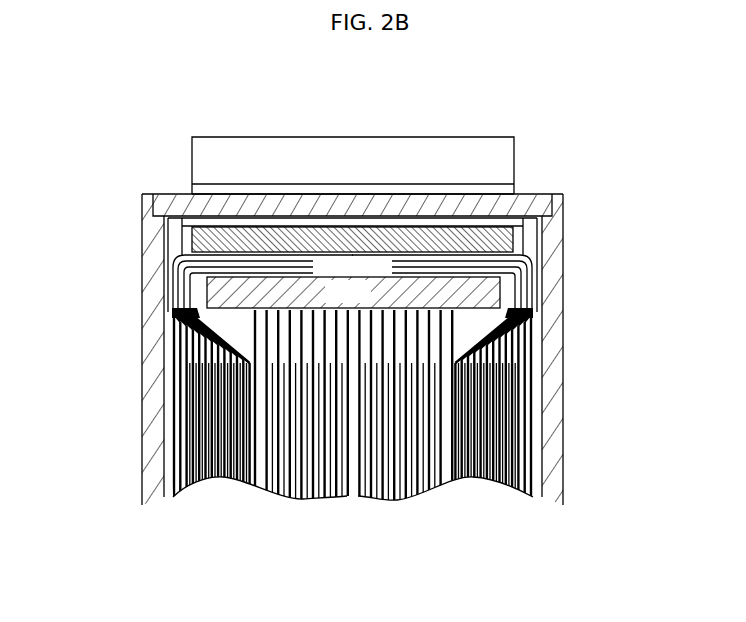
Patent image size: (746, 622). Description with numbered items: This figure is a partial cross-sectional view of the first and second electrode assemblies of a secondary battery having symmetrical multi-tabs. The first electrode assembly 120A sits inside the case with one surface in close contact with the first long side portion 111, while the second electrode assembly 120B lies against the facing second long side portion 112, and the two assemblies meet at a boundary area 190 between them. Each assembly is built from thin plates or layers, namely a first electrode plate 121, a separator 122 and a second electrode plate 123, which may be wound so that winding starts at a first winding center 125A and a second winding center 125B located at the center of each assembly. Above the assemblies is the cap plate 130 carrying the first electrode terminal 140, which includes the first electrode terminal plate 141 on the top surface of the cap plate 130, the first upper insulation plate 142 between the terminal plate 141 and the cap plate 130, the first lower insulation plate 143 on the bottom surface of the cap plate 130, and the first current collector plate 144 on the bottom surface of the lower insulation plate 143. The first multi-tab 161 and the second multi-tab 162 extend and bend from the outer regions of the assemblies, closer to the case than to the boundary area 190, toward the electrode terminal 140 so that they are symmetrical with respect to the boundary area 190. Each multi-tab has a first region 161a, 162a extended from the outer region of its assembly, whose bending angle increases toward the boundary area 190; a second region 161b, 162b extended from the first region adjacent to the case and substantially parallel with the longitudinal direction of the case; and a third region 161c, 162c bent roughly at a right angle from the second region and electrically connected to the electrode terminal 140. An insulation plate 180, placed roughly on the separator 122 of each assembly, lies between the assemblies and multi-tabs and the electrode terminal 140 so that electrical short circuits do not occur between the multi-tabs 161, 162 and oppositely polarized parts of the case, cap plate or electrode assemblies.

The first long side portion 111 is at (150, 440).
The second long side portion 112 is at (555, 440).
The first electrode assembly 120A is at (196, 454).
The second electrode assembly 120B is at (491, 500).
The first electrode plate 121 is at (176, 497).
The separator 122 is at (411, 478).
The second electrode plate 123 is at (236, 480).
The first winding center 125A is at (258, 478).
The second winding center 125B is at (447, 476).
The cap plate 130 is at (532, 204).
The first electrode terminal 140 is at (213, 134).
The first electrode terminal plate 141 is at (400, 160).
The first upper insulation plate 142 is at (464, 192).
The first lower insulation plate 143 is at (328, 220).
The first current collector plate 144 is at (258, 240).
The first multi-tab 161 is at (200, 285).
The first region of first multi-tab 161a is at (190, 345).
The second region of first multi-tab 161b is at (187, 271).
The third region of first multi-tab 161c is at (210, 225).
The second multi-tab 162 is at (504, 285).
The first region of second multi-tab 162a is at (495, 348).
The second region of second multi-tab 162b is at (523, 274).
The third region of second multi-tab 162c is at (465, 260).
The insulation plate 180 is at (353, 292).
The boundary area 190 is at (353, 484).